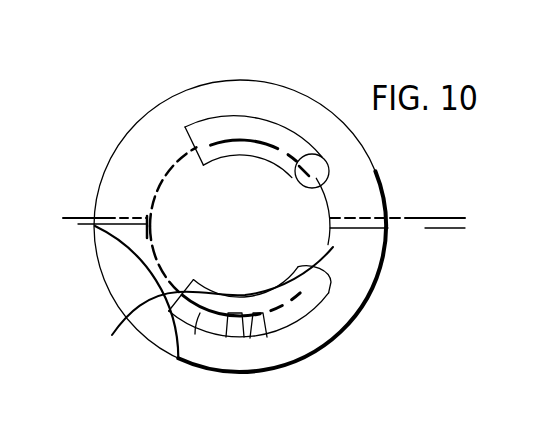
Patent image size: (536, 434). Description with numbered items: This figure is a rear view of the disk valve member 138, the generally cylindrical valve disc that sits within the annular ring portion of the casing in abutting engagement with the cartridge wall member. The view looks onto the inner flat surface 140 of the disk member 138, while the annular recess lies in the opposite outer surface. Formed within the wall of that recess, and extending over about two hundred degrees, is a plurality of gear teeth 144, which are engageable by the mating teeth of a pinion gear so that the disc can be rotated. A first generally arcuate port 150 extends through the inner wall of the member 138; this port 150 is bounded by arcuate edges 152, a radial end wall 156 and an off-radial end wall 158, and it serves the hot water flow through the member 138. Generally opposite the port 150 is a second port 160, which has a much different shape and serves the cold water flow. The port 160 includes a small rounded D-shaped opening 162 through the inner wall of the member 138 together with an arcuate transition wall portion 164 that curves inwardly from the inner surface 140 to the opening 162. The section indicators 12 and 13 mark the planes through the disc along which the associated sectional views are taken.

The disk valve member 138 is at (349, 84).
The inner flat surface 140 is at (157, 128).
The gear teeth 144 is at (233, 315).
The first arcuate port 150 is at (303, 298).
The arcuate edge 152 is at (386, 236).
The radial end wall 156 is at (210, 310).
The off-radial end wall 158 is at (330, 272).
The second port 160 is at (292, 117).
The D-shaped opening 162 is at (318, 164).
The arcuate transition wall portion 164 is at (245, 132).
The section line 12 is at (63, 218).
The section line 13 is at (82, 224).